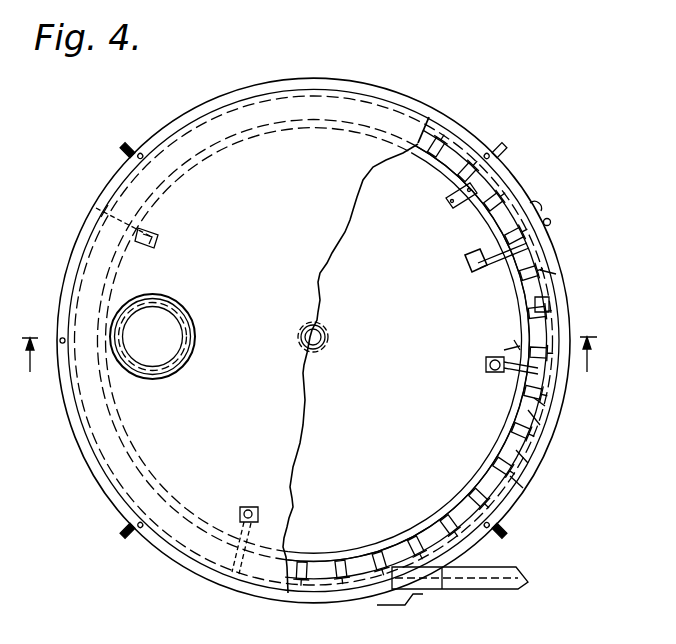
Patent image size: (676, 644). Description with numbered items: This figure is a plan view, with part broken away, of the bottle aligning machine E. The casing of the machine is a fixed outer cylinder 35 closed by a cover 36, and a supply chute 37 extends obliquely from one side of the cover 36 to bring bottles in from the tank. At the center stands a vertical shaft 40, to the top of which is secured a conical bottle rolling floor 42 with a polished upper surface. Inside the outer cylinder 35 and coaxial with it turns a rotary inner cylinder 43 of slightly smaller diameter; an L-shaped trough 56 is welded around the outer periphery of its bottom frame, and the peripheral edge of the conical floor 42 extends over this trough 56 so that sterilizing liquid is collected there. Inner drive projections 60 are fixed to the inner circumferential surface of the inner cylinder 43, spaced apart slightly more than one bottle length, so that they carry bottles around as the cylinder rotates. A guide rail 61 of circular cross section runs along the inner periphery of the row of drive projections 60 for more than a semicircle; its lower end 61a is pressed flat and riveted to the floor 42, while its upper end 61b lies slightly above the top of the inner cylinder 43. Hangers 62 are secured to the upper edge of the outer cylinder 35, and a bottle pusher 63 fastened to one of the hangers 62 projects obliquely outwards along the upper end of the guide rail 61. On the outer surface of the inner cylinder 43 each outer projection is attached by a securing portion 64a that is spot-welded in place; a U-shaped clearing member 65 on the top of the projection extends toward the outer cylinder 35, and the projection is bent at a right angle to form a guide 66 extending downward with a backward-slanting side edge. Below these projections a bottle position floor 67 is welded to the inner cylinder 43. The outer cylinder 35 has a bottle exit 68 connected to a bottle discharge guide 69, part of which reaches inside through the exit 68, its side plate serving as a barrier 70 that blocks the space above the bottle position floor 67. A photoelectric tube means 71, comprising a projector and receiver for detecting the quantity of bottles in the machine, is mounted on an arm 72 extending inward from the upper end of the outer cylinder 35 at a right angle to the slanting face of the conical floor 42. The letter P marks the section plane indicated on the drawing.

The fixed outer cylinder 35 is at (547, 265).
The cover 36 is at (250, 332).
The supply chute 37 is at (180, 312).
The vertical shaft 40 is at (320, 337).
The conical bottle rolling floor 42 is at (390, 312).
The rotary inner cylinder 43 is at (530, 418).
The trough 56 is at (540, 279).
The inner drive projections 60 is at (472, 487).
The guide rail 61 is at (426, 168).
The lower end of guide rail 61a is at (462, 209).
The upper end of guide rail 61b is at (517, 350).
The hangers 62 is at (163, 240).
The bottle pusher 63 is at (506, 353).
The securing portion of outer projection 64a is at (517, 483).
The U-shaped clearing member 65 is at (538, 402).
The guide 66 is at (520, 456).
The bottle position floor 67 is at (547, 306).
The bottle exit 68 is at (437, 576).
The bottle discharge guide 69 is at (497, 570).
The barrier 70 is at (378, 552).
The photoelectric tube means 71 is at (466, 266).
The arm 72 is at (500, 246).
The bottle aligning machine E is at (190, 100).
The section plane P is at (308, 366).